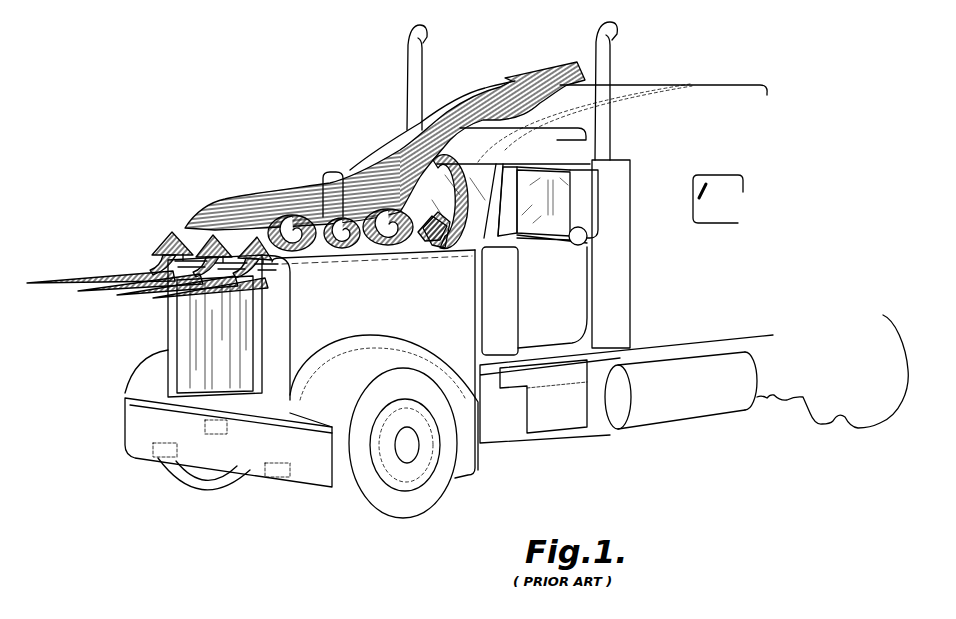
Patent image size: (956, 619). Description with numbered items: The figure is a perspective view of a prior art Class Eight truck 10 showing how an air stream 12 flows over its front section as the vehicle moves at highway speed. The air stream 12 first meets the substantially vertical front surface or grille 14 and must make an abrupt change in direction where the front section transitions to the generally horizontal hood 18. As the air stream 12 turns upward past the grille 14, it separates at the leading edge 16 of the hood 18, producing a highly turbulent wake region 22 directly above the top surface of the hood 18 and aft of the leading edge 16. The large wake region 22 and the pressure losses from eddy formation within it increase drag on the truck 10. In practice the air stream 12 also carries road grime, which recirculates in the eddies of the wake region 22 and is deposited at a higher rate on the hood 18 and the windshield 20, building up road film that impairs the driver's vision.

The Class 8 truck 10 is at (196, 100).
The air stream 12 is at (245, 197).
The grille 14 is at (183, 335).
The leading edge 16 is at (186, 257).
The hood 18 is at (370, 251).
The windshield 20 is at (420, 197).
The wake region 22 is at (359, 239).